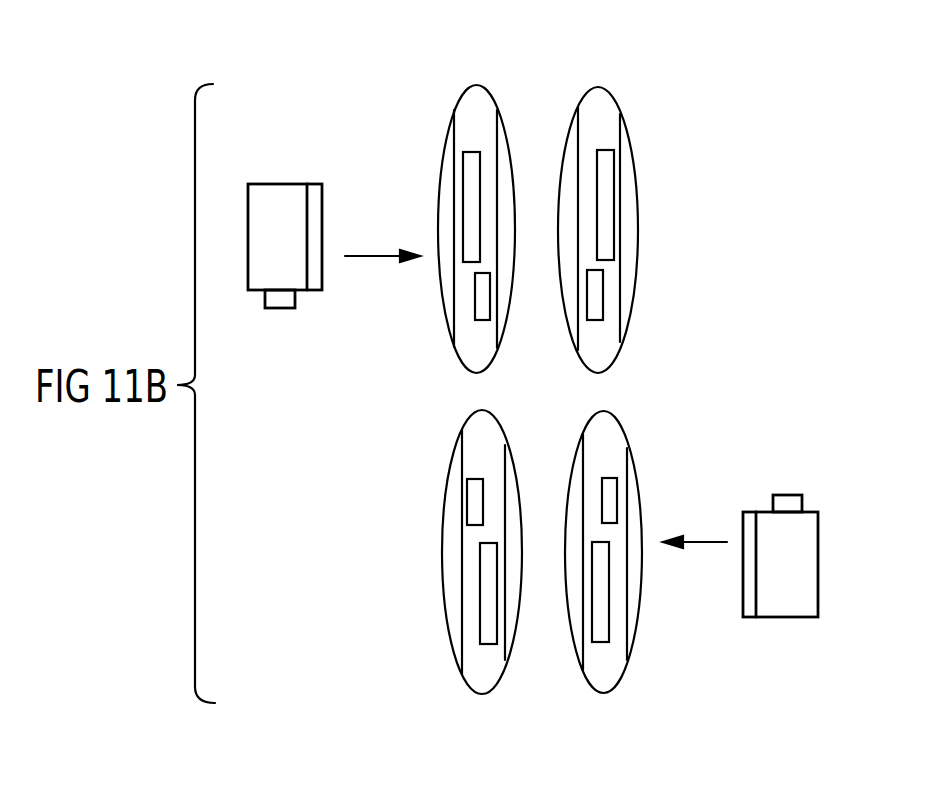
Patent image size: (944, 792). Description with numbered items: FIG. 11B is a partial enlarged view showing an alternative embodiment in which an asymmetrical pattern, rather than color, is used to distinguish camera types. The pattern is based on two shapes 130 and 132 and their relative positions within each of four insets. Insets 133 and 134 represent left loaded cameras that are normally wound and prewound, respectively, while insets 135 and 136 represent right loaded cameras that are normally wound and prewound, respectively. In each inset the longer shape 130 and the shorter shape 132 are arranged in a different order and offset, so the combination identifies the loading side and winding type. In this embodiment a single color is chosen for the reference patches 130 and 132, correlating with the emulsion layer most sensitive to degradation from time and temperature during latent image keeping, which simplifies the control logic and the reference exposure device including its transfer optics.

The shape 130 is at (467, 173).
The shape 132 is at (485, 303).
The inset 133 is at (487, 93).
The inset 134 is at (612, 100).
The inset 135 is at (466, 424).
The inset 136 is at (618, 423).